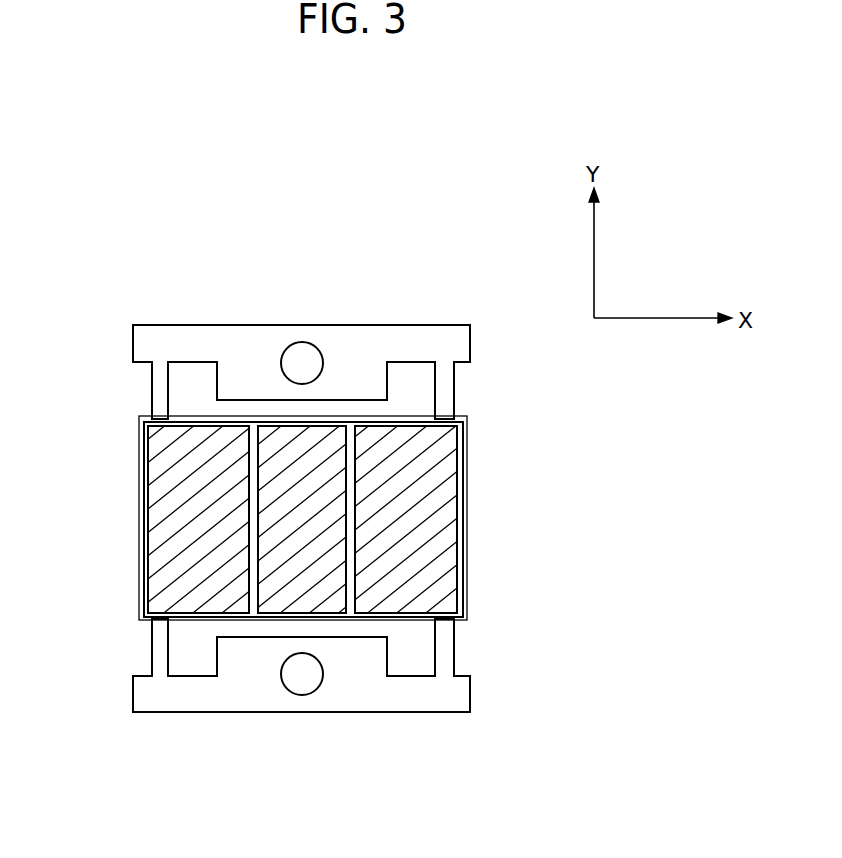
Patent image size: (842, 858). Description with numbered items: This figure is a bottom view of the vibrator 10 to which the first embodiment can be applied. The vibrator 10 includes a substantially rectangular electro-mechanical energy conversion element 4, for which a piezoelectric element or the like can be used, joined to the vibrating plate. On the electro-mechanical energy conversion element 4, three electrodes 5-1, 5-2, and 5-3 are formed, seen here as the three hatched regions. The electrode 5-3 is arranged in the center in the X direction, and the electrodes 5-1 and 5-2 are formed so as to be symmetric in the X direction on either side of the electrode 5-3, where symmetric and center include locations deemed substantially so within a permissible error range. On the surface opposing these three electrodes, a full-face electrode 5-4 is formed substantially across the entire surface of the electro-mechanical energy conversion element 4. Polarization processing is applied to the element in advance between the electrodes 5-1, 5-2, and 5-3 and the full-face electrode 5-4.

The vibrator 10 is at (210, 195).
The electro-mechanical energy conversion element 4 is at (138, 487).
The electrode 5-1 is at (175, 553).
The electrode 5-2 is at (443, 558).
The electrode 5-3 is at (320, 495).
The full-face electrode 5-4 is at (465, 527).